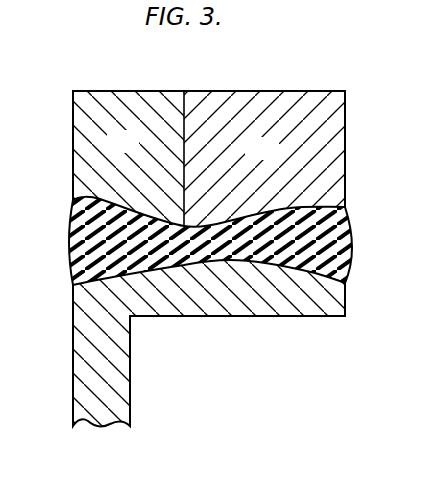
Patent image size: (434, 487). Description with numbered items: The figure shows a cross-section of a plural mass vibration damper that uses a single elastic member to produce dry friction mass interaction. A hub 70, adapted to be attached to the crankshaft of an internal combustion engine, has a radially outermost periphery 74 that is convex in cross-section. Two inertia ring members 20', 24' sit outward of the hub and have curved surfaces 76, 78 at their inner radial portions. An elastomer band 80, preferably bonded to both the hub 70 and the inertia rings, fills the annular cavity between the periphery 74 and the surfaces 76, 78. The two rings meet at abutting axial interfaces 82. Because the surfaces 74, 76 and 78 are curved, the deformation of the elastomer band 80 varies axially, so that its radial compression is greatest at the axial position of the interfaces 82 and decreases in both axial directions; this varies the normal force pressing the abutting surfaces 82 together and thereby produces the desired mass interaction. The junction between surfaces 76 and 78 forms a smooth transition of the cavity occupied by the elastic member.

The hub 70 is at (117, 379).
The inertia ring member 20' is at (128, 158).
The inertia ring member 24' is at (264, 159).
The abutting axial interfaces 82 is at (191, 71).
The inner radial surface 78 is at (112, 202).
The inner radial surface 76 is at (284, 208).
The radially outermost periphery of the hub 74 is at (282, 268).
The elastomer band 80 is at (80, 237).